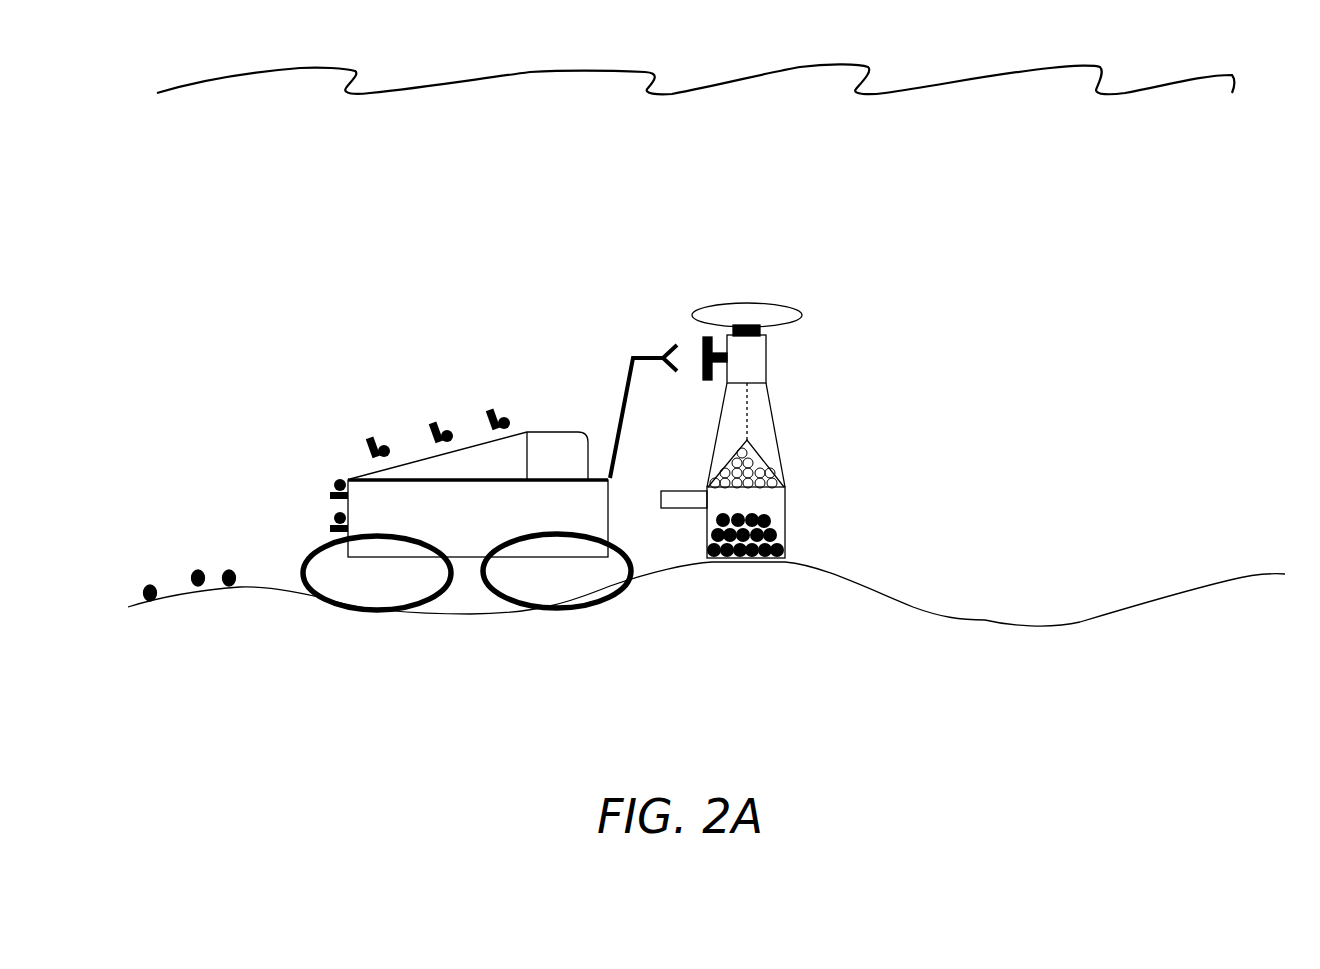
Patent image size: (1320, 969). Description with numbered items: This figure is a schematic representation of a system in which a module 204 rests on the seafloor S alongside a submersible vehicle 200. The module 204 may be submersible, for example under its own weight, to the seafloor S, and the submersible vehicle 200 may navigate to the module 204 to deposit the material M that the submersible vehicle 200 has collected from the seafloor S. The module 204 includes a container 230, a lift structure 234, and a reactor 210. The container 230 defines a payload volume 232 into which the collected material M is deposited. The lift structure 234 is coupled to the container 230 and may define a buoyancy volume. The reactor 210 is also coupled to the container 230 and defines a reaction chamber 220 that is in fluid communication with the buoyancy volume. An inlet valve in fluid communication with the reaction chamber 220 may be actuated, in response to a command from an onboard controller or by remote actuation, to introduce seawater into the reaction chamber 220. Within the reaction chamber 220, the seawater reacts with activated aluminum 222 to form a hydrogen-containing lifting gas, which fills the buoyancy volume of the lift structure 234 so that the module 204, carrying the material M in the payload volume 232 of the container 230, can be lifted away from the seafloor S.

The submersible vehicle 200 is at (545, 430).
The module 204 is at (786, 489).
The reactor 210 is at (757, 408).
The reaction chamber 220 is at (762, 383).
The activated aluminum 222 is at (763, 472).
The container 230 is at (786, 520).
The payload volume 232 is at (720, 502).
The lift structure 234 is at (785, 303).
The material M is at (199, 567).
The seafloor S is at (975, 617).